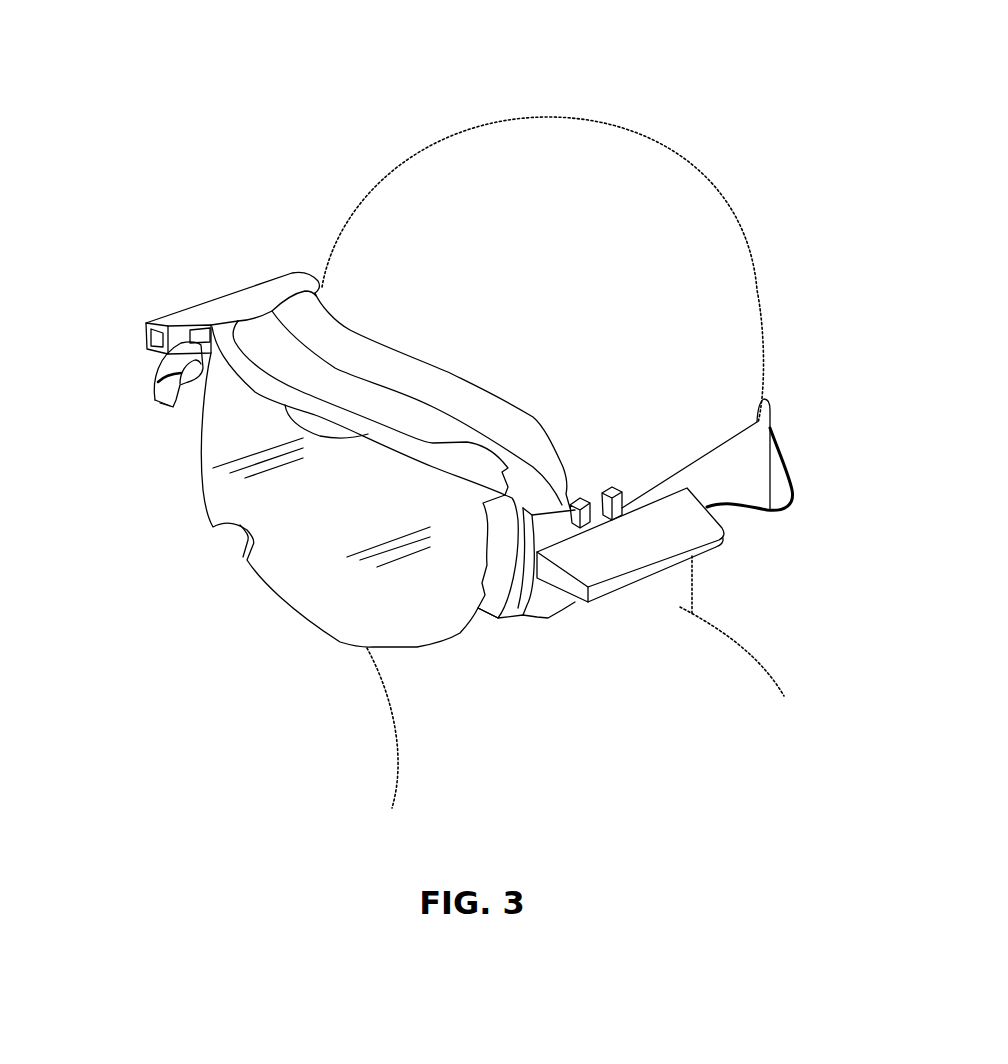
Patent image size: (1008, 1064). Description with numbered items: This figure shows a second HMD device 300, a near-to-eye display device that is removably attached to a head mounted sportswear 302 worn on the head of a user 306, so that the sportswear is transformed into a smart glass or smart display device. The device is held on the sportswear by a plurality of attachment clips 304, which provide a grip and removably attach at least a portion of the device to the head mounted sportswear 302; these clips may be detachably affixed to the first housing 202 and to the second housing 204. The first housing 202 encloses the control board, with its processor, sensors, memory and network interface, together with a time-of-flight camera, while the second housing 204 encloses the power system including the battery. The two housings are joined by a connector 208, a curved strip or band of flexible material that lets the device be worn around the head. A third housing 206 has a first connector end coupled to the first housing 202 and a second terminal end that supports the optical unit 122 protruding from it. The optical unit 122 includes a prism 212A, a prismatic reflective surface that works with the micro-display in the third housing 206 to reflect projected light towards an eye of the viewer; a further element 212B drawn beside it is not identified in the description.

The second HMD device 300 is at (735, 70).
The user 306 is at (703, 173).
The plurality of attachment clips 304 is at (623, 501).
The first housing 202 is at (215, 298).
The third housing 206 is at (157, 367).
The second hinge portion 212B is at (157, 387).
The prism 212A is at (157, 400).
The optical unit 122 is at (170, 400).
The head mounted sportswear 302 is at (338, 642).
The second housing 204 is at (640, 565).
The connector 208 is at (793, 490).